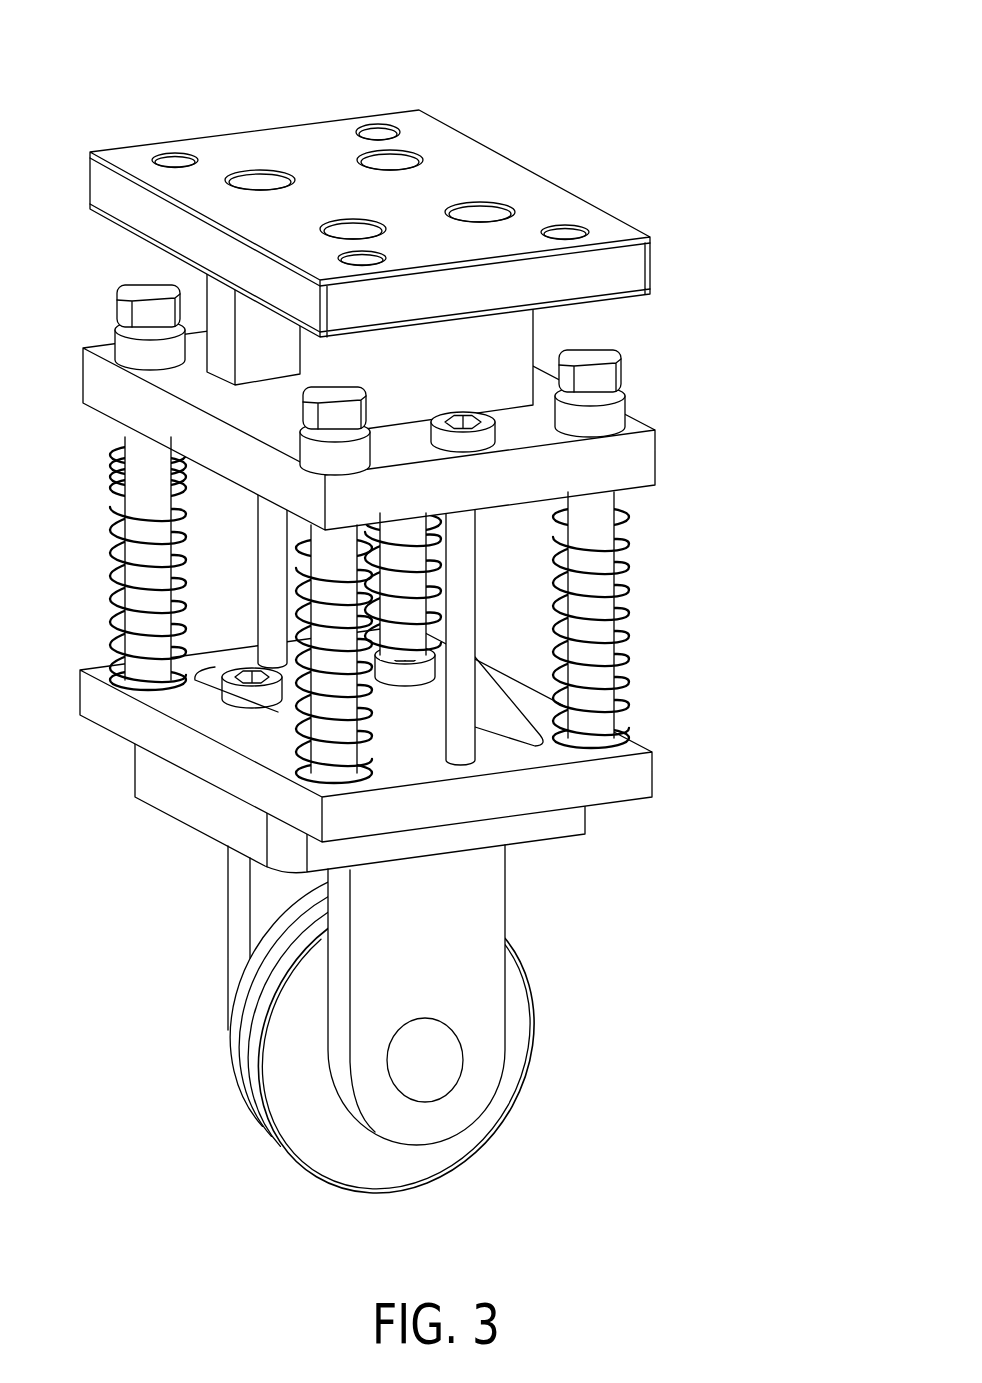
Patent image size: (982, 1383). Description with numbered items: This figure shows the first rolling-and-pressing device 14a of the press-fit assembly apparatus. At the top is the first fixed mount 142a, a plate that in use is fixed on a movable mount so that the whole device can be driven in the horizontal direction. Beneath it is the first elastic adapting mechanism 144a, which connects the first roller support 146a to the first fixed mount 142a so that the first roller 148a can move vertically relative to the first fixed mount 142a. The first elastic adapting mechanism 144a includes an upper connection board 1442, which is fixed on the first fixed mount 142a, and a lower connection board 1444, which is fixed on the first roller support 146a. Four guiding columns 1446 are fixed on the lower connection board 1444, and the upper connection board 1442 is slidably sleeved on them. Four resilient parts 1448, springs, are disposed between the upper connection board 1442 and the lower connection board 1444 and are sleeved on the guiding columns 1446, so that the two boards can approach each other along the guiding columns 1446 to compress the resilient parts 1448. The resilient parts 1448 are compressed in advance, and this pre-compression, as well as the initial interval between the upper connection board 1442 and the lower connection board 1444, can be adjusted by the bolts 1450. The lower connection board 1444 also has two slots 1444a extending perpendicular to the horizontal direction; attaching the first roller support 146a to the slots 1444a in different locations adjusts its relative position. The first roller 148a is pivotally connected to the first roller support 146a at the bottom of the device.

The first rolling-and-pressing device 14a is at (467, 599).
The first fixed mount 142a is at (603, 263).
The first elastic adapting mechanism 144a is at (467, 594).
The upper connection board 1442 is at (622, 462).
The lower connection board 1444 is at (631, 771).
The slots 1444a is at (523, 742).
The guiding columns 1446 is at (600, 675).
The resilient parts 1448 is at (762, 777).
The bolts 1450 is at (458, 567).
The first roller support 146a is at (472, 903).
The first roller 148a is at (515, 1062).